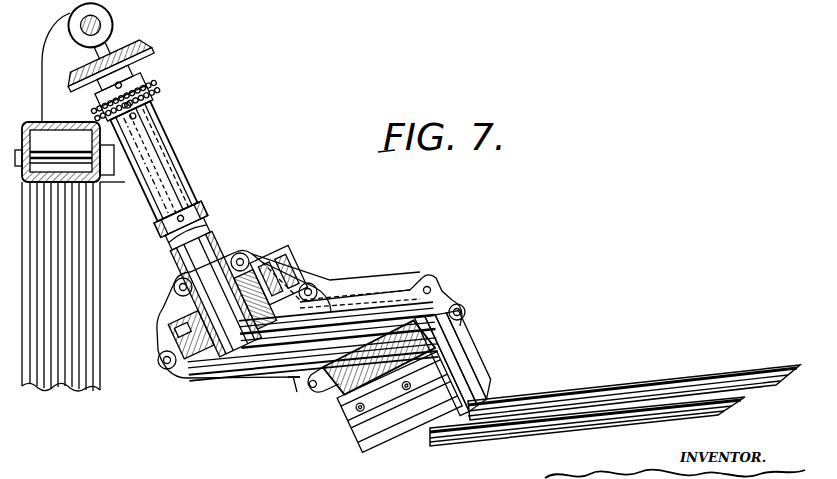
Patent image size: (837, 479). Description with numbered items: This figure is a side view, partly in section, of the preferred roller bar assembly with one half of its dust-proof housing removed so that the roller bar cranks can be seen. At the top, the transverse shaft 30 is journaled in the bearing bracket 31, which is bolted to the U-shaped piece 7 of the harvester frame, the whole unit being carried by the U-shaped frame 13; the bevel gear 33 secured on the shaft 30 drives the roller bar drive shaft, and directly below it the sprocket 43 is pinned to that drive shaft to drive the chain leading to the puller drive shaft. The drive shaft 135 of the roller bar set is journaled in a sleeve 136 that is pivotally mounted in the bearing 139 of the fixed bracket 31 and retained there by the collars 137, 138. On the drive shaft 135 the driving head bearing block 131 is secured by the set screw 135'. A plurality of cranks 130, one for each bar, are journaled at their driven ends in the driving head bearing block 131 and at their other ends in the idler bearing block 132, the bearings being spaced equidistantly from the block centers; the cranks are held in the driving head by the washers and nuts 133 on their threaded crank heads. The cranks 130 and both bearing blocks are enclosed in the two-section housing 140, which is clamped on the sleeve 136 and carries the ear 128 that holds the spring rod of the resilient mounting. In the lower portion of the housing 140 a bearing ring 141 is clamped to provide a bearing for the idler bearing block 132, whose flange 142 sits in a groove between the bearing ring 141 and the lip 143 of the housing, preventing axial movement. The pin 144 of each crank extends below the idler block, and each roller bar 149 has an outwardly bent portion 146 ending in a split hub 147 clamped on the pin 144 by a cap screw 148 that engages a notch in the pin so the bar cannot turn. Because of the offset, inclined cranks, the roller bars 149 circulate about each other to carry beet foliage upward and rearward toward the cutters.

The U-shaped piece 7 is at (87, 270).
The U-shaped frame 13 is at (349, 424).
The transverse shaft 30 is at (105, 26).
The bearing bracket 31 is at (50, 70).
The bevel gear 33 is at (143, 45).
The sprocket 43 is at (157, 79).
The ear 128 is at (438, 279).
The crank 130 is at (335, 310).
The driving head bearing block 131 is at (293, 280).
The idler bearing block 132 is at (387, 350).
The washers and nuts 133 is at (262, 270).
The drive shaft 135 is at (219, 300).
The set screw 135' is at (189, 367).
The sleeve 136 is at (202, 232).
The collar 137 is at (188, 212).
The collar 138 is at (157, 101).
The bearing 139 is at (187, 153).
The housing 140 is at (267, 372).
The bearing ring 141 is at (460, 338).
The flange 142 is at (452, 300).
The lip 143 is at (297, 388).
The crank pin 144 is at (457, 328).
The outwardly bent portion 146 is at (477, 384).
The split hub 147 is at (467, 362).
The cap screw 148 is at (457, 390).
The roller bar 149 is at (582, 393).